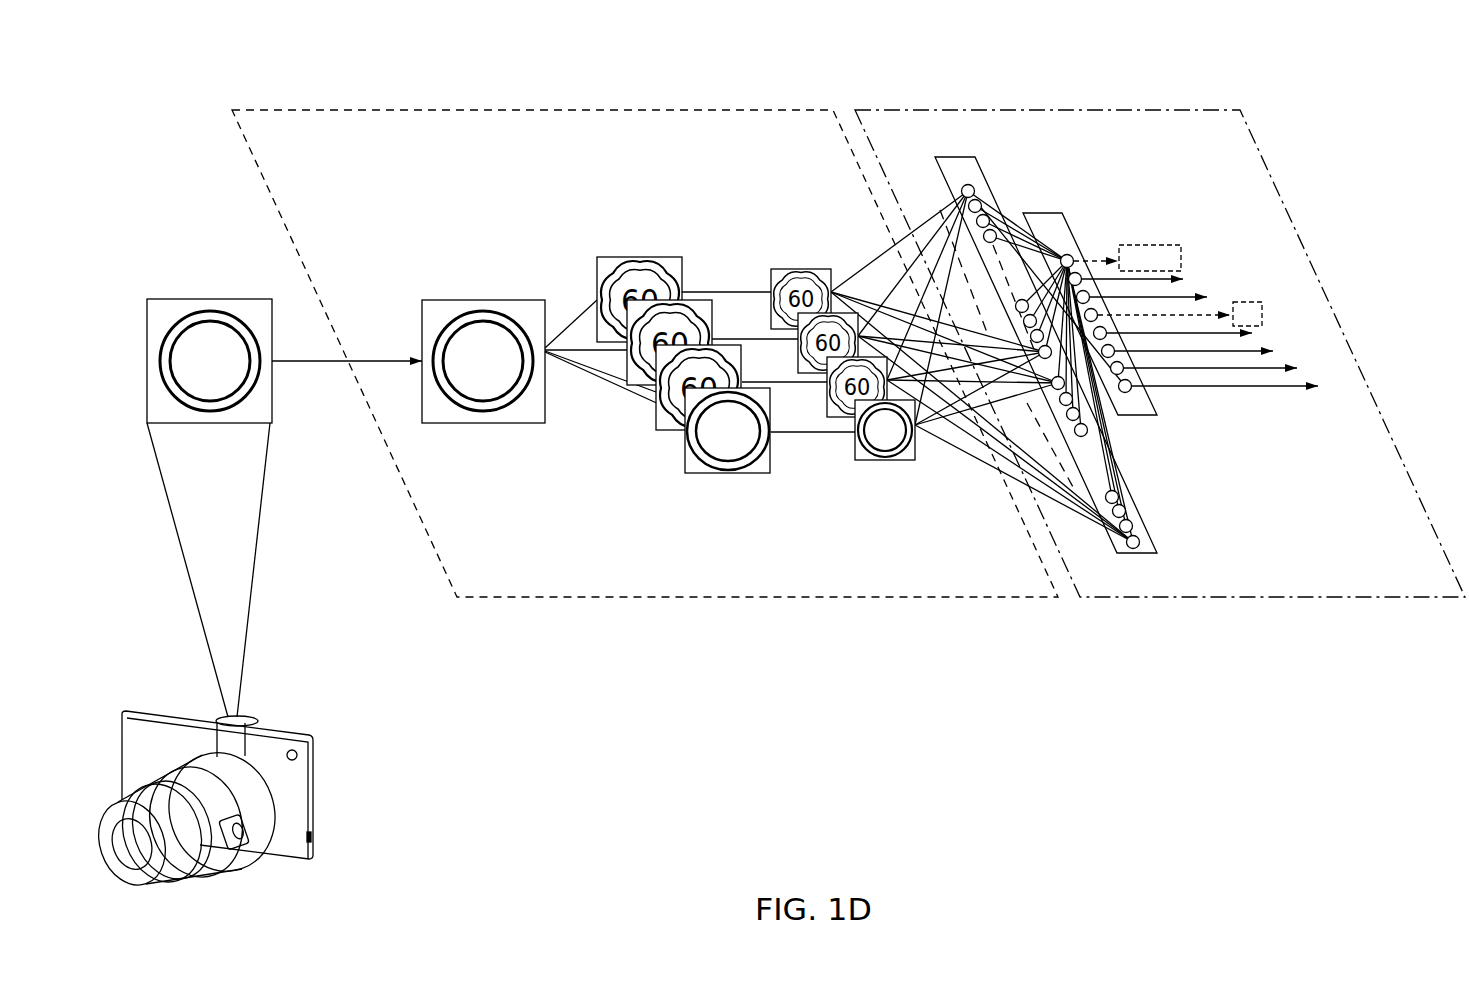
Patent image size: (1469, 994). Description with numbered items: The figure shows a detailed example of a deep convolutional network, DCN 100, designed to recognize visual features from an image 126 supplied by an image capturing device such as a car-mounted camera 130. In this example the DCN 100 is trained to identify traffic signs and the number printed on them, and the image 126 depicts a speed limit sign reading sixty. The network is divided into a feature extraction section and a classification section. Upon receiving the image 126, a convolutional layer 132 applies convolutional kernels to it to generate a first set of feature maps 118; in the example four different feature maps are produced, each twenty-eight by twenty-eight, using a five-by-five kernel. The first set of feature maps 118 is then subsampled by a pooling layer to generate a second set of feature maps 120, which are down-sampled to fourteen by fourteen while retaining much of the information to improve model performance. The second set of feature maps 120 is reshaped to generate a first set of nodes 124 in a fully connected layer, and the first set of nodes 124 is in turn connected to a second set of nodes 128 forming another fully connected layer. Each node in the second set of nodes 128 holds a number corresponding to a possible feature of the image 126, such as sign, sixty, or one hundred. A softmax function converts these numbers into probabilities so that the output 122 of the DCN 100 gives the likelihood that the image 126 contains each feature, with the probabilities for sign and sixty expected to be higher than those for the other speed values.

The DCN 100 is at (205, 58).
The first set of feature maps 118 is at (636, 240).
The second set of feature maps 120 is at (799, 252).
The output 122 is at (1121, 186).
The first set of nodes 124 is at (952, 157).
The image 126 is at (208, 298).
The second set of nodes 128 is at (1160, 416).
The car-mounted camera 130 is at (152, 712).
The convolutional layer 132 is at (482, 299).